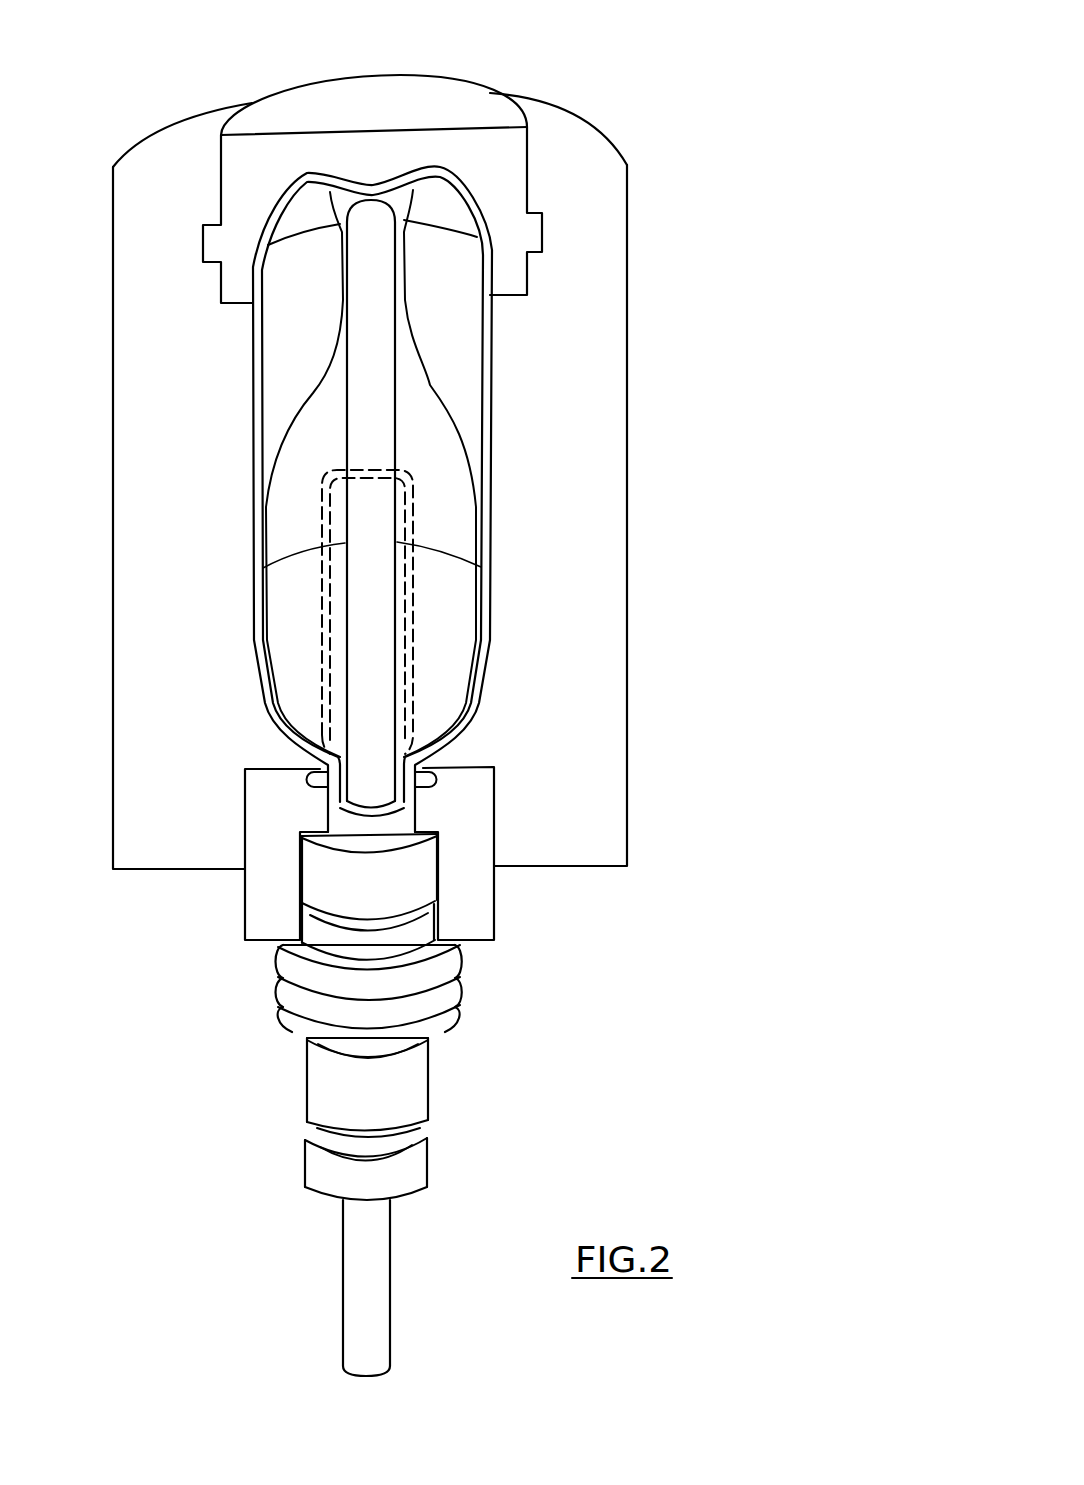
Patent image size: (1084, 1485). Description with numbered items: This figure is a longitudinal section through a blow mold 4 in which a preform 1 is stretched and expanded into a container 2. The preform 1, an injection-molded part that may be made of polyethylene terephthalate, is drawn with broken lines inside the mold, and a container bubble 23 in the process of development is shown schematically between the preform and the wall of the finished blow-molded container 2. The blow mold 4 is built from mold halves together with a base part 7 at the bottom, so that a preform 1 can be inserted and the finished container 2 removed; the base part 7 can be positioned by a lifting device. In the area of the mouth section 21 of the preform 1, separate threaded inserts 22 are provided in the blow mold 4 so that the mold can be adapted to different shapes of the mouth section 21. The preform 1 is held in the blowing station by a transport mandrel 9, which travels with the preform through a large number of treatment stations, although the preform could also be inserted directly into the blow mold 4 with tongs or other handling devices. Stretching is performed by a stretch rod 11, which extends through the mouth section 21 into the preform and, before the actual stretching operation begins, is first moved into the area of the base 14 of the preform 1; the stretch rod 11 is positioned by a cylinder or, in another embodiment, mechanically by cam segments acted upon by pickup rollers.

The preform 1 is at (410, 645).
The container 2 is at (483, 407).
The blow mold 4 is at (583, 478).
The base part 7 is at (462, 93).
The transport mandrel 9 is at (448, 1010).
The stretch rod 11 is at (342, 1300).
The base 14 is at (403, 473).
The mouth section 21 is at (410, 798).
The threaded inserts 22 is at (478, 895).
The container bubble 23 is at (427, 363).